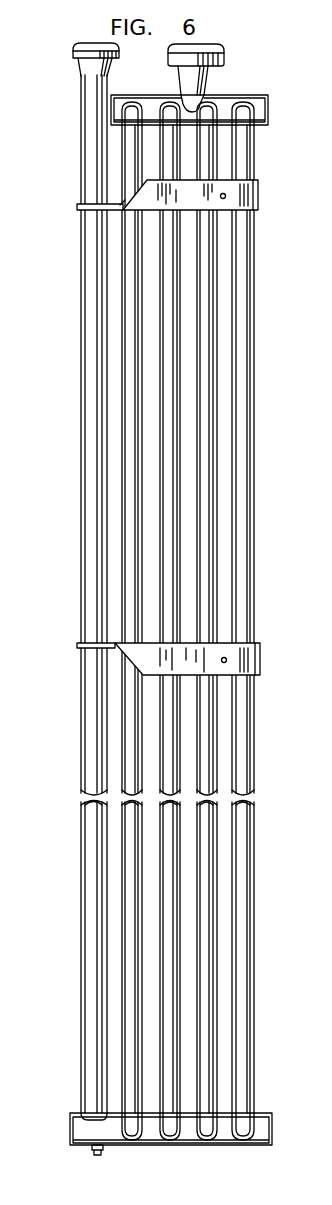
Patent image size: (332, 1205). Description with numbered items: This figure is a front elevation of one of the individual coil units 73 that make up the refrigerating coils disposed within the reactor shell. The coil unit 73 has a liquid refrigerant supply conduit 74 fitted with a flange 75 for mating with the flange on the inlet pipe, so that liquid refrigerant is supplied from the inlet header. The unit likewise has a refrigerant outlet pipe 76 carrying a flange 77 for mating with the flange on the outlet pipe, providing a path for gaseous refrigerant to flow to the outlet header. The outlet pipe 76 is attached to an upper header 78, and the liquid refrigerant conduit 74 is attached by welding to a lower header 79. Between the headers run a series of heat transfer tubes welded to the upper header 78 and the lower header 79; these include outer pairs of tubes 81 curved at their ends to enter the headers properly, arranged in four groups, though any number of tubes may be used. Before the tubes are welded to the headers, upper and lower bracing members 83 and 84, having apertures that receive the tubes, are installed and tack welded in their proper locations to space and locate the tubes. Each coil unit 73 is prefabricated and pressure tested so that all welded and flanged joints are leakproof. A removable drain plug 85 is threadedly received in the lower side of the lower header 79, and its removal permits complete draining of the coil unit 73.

The coil unit 73 is at (80, 570).
The liquid refrigerant supply conduit 74 is at (82, 463).
The flange 75 is at (72, 58).
The refrigerant outlet pipe 76 is at (208, 90).
The flange 77 is at (226, 57).
The upper header 78 is at (268, 104).
The lower header 79 is at (272, 1135).
The curved tubes 81 is at (254, 1056).
The upper bracing member 83 is at (296, 209).
The lower bracing member 84 is at (260, 661).
The drain plug 85 is at (103, 1151).